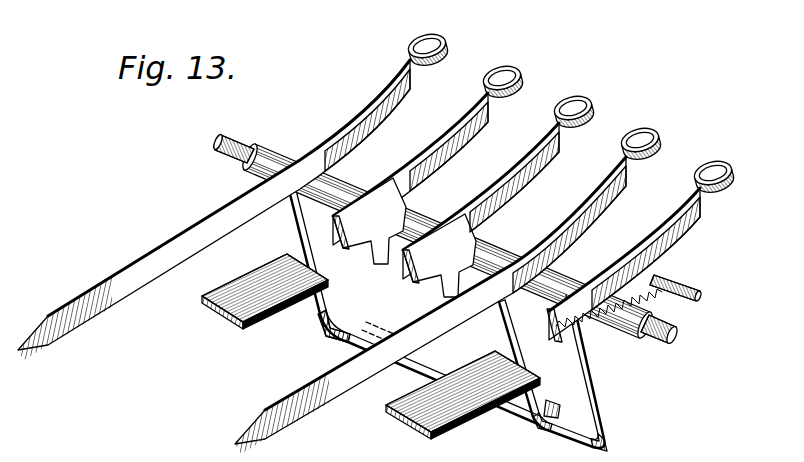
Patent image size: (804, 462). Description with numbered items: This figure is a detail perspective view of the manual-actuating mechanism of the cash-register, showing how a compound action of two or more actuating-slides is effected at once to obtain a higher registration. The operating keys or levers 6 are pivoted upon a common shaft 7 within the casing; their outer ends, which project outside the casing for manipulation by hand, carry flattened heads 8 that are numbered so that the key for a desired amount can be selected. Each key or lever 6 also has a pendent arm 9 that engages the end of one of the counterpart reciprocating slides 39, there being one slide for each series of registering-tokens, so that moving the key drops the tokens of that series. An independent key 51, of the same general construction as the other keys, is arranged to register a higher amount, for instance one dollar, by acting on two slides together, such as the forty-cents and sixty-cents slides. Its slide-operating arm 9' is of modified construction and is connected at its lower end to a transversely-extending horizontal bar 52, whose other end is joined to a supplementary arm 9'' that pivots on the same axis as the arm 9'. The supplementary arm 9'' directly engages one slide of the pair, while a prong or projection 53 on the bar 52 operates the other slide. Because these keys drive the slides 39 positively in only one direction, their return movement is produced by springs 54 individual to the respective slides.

The operating key or lever 6 is at (339, 391).
The flattened head 8 is at (447, 46).
The pendent arm 9 is at (428, 318).
The slide-operating arm 9' is at (601, 373).
The supplementary arm 9'' is at (350, 312).
The reciprocating slide 39 is at (371, 346).
The independent key 51 is at (632, 264).
The transversely-extending horizontal bar 52 is at (517, 406).
The prong or projection 53 is at (549, 398).
The spring 54 is at (658, 300).
The common shaft 7 is at (660, 345).